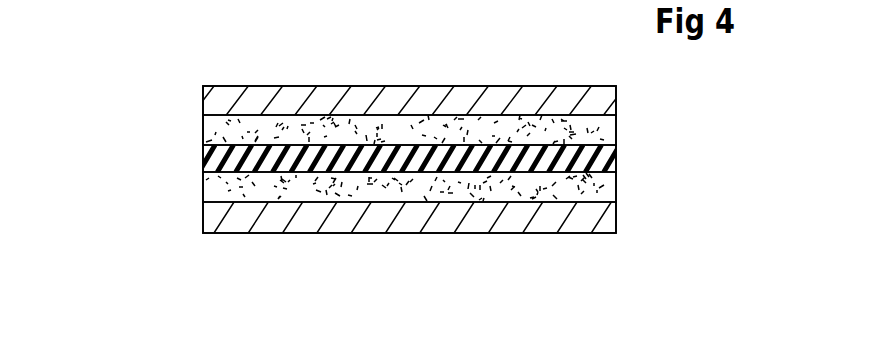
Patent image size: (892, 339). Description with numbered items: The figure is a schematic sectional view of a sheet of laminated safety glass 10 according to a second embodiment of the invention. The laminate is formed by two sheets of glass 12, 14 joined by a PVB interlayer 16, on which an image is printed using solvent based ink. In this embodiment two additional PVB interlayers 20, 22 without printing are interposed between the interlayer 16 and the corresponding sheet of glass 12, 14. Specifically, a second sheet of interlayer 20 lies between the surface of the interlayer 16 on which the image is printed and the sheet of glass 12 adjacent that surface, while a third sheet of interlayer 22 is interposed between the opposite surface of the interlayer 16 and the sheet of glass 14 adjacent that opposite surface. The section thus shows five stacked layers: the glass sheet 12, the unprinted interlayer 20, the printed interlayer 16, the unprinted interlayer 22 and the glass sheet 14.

The laminated safety glass 10 is at (80, 0).
The sheet of glass 12 is at (616, 99).
The sheet of glass 14 is at (616, 218).
The PVB interlayer 16 is at (616, 156).
The second sheet of interlayer 20 is at (616, 129).
The third sheet of interlayer 22 is at (616, 184).